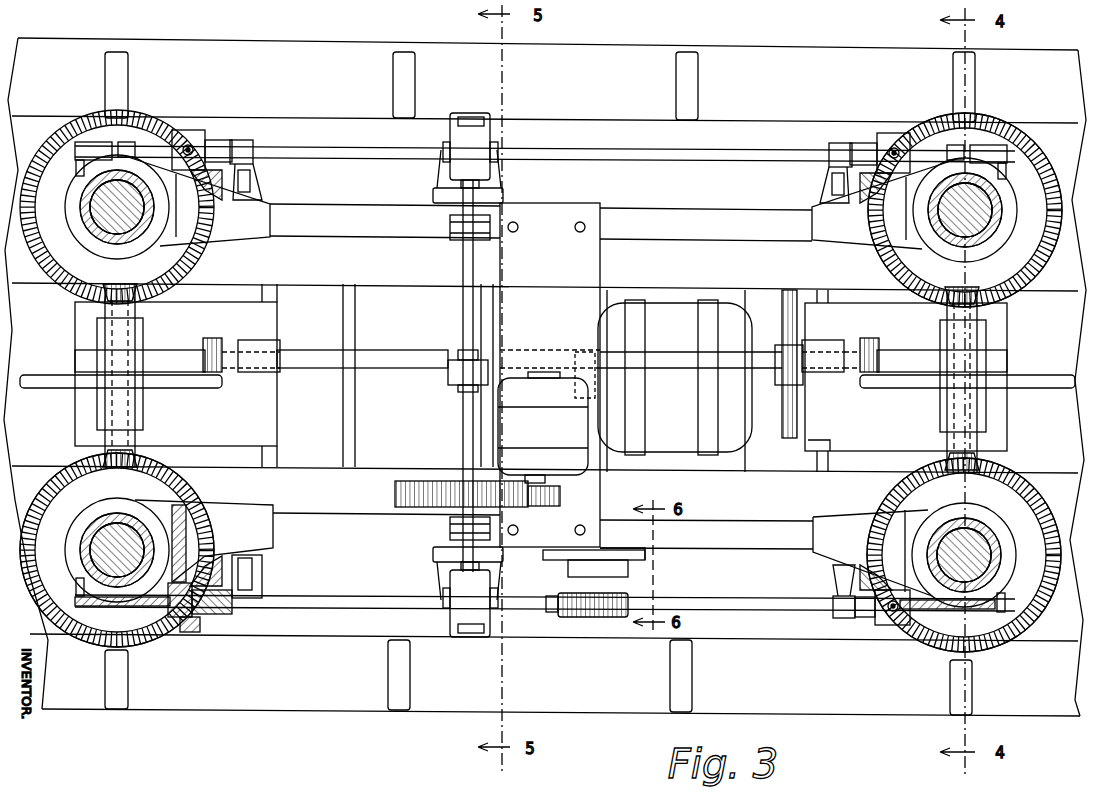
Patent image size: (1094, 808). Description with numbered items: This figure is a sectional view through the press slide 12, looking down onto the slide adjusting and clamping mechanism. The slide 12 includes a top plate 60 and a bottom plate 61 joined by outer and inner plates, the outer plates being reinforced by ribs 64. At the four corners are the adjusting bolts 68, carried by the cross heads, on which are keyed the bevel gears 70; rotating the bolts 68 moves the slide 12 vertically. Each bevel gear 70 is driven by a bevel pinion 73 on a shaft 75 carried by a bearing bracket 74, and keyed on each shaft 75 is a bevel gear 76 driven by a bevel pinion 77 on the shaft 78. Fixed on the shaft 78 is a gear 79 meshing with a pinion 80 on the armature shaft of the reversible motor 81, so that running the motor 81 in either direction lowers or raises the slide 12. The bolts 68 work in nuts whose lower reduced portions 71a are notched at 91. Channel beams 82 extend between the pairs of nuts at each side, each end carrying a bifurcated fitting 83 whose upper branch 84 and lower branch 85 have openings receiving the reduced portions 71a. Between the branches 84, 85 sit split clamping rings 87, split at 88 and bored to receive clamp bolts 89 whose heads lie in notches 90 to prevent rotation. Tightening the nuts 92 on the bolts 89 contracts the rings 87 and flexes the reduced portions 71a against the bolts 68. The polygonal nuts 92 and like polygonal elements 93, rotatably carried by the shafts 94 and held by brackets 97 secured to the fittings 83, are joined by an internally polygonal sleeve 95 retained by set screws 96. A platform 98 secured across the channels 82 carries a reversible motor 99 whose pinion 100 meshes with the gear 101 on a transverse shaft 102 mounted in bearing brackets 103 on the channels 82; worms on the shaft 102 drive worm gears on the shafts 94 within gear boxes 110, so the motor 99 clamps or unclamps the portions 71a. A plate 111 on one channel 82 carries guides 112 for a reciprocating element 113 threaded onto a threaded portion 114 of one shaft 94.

The slide 12 is at (319, 724).
The top plate 60 is at (750, 126).
The bottom plate 61 is at (808, 50).
The ribs 64 is at (415, 85).
The adjusting bolts 68 is at (160, 208).
The bevel gears 70 is at (70, 116).
The reduced portions of the nuts 71a is at (92, 213).
The bevel pinions 73 is at (76, 294).
The bearing brackets 74 is at (76, 324).
The shafts 75 is at (110, 358).
The bevel gears 76 is at (52, 389).
The bevel pinions 77 is at (212, 340).
The shaft 78 is at (420, 369).
The gear 79 is at (816, 446).
The pinion 80 is at (780, 402).
The reversible motor 81 is at (690, 377).
The channel beams 82 is at (645, 211).
The bifurcated fittings 83 is at (247, 238).
The upper branch 84 is at (153, 241).
The lower branch 85 is at (186, 510).
The clamping rings 87 is at (90, 142).
The split 88 is at (126, 142).
The clamp bolts 89 is at (1012, 160).
The notches 90 is at (78, 166).
The notches 91 is at (95, 183).
The nuts 92 is at (196, 640).
The elements 93 is at (222, 140).
The shafts 94 is at (362, 158).
The sleeve 95 is at (205, 145).
The set screws 96 is at (190, 146).
The brackets 97 is at (252, 140).
The platform 98 is at (600, 262).
The reversible motor 99 is at (536, 390).
The pinion 100 is at (560, 504).
The gear 101 is at (395, 498).
The transverse shaft 102 is at (463, 312).
The bearing brackets 103 is at (452, 240).
The gear boxes 110 is at (425, 622).
The plate 111 is at (650, 556).
The guides 112 is at (566, 562).
The reciprocating element 113 is at (606, 620).
The threaded portion 114 is at (560, 618).